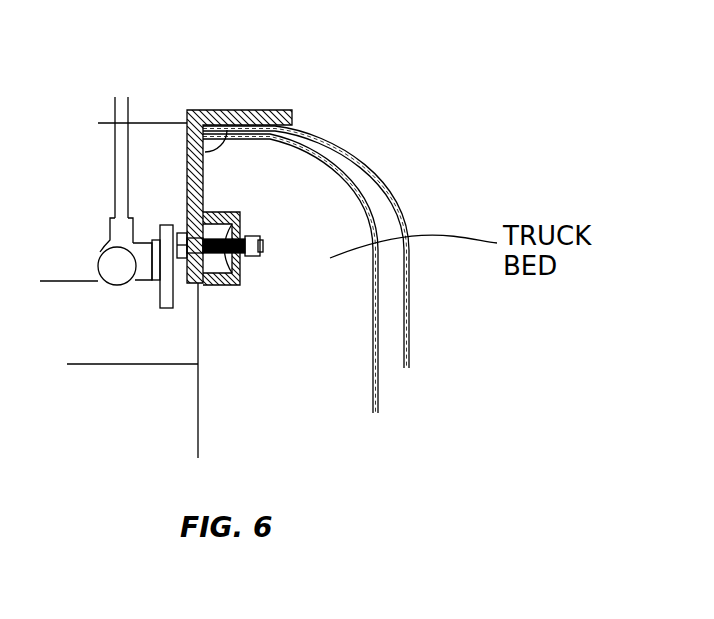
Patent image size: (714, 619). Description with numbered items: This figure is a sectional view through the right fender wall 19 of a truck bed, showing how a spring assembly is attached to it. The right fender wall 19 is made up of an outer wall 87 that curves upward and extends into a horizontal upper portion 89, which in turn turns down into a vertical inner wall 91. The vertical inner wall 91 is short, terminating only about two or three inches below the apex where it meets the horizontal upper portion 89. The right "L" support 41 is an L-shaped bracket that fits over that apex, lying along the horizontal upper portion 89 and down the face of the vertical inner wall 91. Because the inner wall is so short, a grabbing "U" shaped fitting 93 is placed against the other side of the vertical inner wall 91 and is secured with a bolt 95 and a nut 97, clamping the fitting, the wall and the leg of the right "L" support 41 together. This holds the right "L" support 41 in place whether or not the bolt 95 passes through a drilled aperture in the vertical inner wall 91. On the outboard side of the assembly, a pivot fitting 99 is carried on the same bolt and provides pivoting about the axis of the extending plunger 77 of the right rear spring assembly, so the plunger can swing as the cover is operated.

The right fender wall 19 is at (413, 460).
The right "L" support 41 is at (245, 110).
The extending plunger 77 is at (118, 197).
The outer wall 87 is at (390, 197).
The horizontal upper portion 89 is at (285, 128).
The vertical inner wall 91 is at (215, 110).
The grabbing "U" shaped fitting 93 is at (230, 212).
The bolt 95 is at (207, 268).
The nut 97 is at (242, 258).
The pivot fitting 99 is at (160, 304).